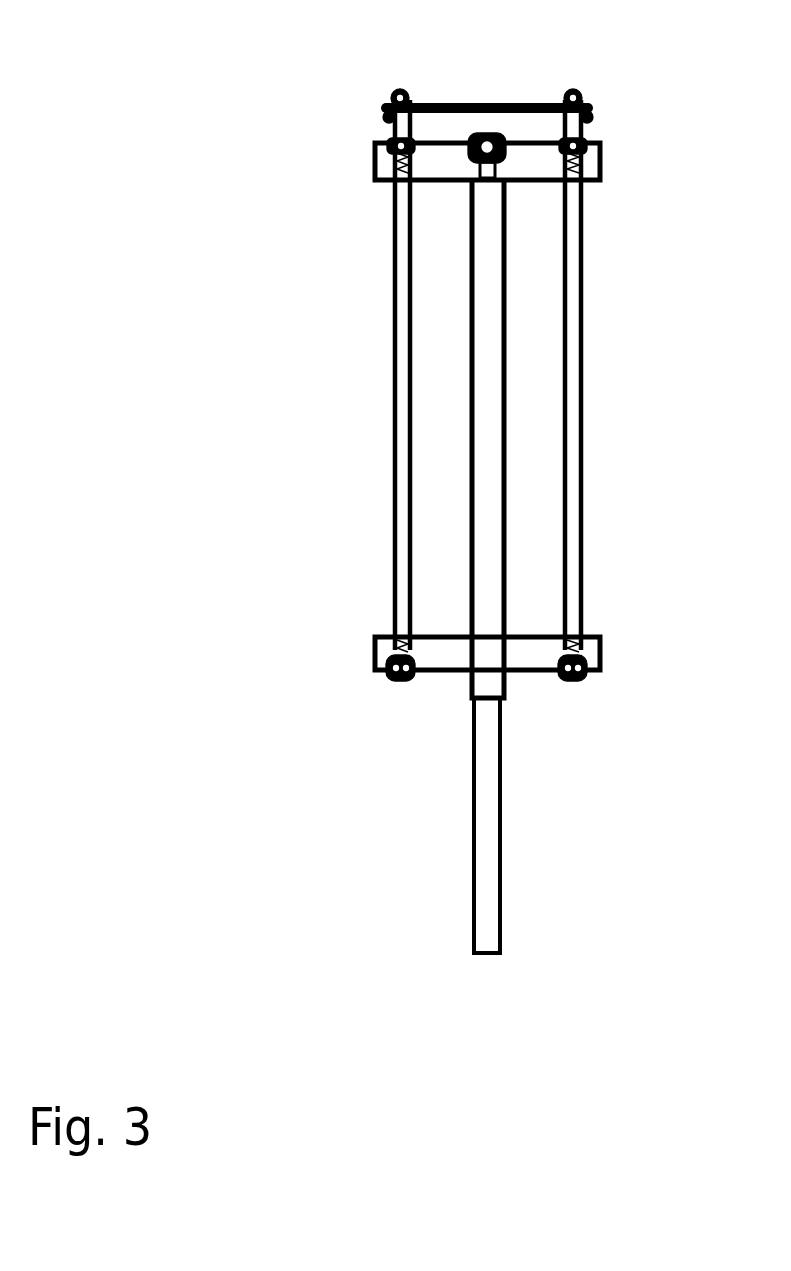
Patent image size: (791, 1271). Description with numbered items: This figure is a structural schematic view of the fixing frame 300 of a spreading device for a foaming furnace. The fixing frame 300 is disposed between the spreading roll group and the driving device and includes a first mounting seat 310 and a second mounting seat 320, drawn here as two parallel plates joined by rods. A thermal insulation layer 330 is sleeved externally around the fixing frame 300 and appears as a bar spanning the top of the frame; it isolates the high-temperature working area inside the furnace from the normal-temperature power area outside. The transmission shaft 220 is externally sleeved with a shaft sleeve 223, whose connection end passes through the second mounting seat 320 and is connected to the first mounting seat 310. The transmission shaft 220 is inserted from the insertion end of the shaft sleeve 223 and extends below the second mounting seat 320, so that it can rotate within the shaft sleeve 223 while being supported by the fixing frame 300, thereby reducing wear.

The thermal insulation layer 330 is at (472, 101).
The first mounting seat 310 is at (431, 166).
The fixing frame 300 is at (402, 332).
The shaft sleeve 223 is at (482, 492).
The second mounting seat 320 is at (433, 658).
The transmission shaft 220 is at (490, 809).